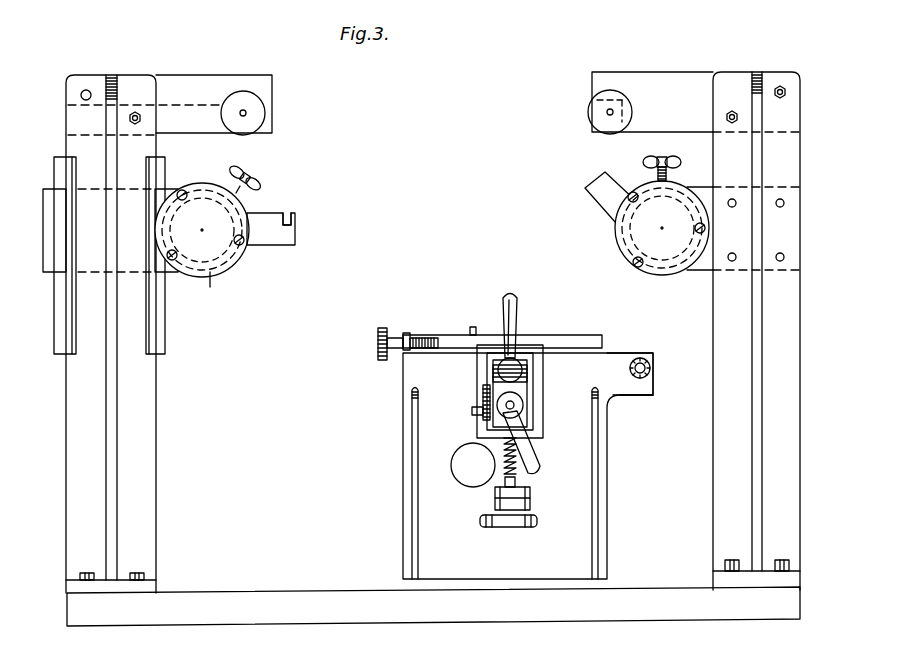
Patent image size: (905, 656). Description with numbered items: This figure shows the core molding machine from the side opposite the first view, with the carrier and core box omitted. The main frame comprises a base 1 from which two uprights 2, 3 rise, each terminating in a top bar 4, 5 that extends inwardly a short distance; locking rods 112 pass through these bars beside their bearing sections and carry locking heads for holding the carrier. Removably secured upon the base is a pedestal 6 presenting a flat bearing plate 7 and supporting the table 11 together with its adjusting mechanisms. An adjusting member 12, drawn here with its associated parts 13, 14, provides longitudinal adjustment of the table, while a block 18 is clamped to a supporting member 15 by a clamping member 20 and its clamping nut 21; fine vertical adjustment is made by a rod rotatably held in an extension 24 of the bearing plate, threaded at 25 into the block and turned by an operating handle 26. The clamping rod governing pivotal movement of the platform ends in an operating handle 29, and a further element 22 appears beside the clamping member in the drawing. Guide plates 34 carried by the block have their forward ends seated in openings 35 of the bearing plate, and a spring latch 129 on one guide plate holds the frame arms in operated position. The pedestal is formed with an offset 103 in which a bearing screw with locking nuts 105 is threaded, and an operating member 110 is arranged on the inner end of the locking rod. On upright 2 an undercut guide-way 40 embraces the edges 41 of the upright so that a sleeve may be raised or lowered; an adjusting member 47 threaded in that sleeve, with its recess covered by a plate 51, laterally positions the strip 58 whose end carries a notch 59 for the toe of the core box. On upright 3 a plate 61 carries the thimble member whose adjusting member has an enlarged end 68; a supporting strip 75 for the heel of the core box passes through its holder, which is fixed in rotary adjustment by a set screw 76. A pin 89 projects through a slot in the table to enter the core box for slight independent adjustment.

The base 1 is at (300, 615).
The upright 2 is at (148, 518).
The upright 3 is at (716, 508).
The top bar 4 is at (205, 82).
The top bar 5 is at (684, 85).
The pedestal 6 is at (403, 521).
The bearing plate 7 is at (505, 484).
The table 11 is at (565, 335).
The adjusting member 12 is at (404, 332).
The adjusting knob 13 is at (398, 358).
The knurled rod 14 is at (427, 336).
The supporting member 15 is at (607, 352).
The block 18 is at (520, 394).
The clamping member 20 is at (522, 407).
The clamping nut 21 is at (500, 411).
The arm 22 is at (528, 461).
The extension 24 is at (516, 501).
The threaded connection 25 is at (504, 472).
The operating handle 26 is at (506, 528).
The operating handle 29 is at (510, 292).
The guide plates 34 is at (478, 377).
The openings 35 is at (487, 396).
The undercut offset guide-way 40 is at (43, 197).
The edges 41 is at (162, 323).
The adjusting member 47 is at (233, 262).
The plate 51 is at (221, 290).
The strip 58 is at (278, 242).
The notch 59 is at (289, 214).
The plate 61 is at (704, 262).
The enlarged end 68 is at (657, 278).
The supporting strip 75 is at (598, 198).
The set screw 76 is at (655, 175).
The pin 89 is at (472, 327).
The offset 103 is at (623, 385).
The locking nuts 105 is at (651, 367).
The operating member 110 is at (470, 465).
The locking rods 112 is at (246, 114).
The spring latch 129 is at (470, 410).